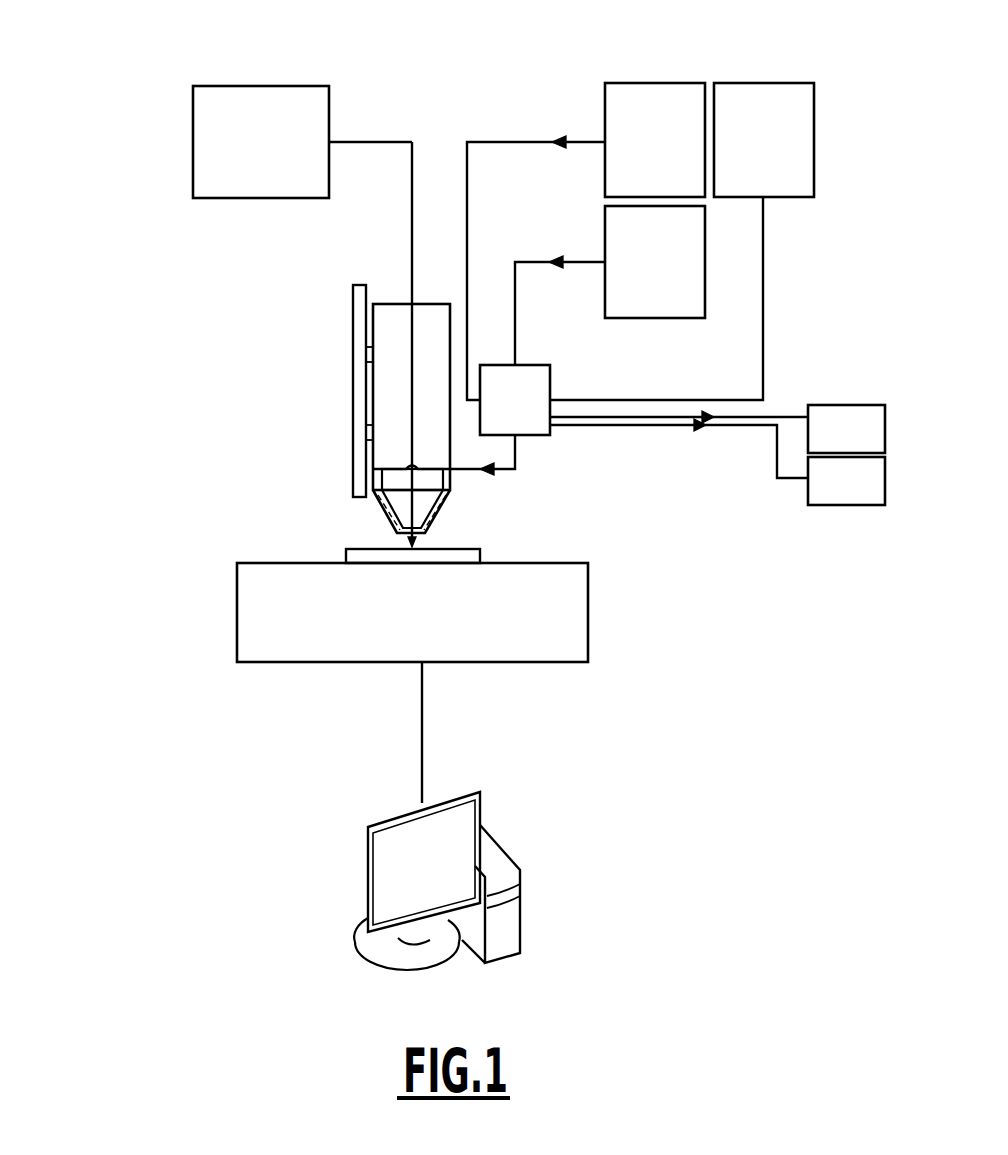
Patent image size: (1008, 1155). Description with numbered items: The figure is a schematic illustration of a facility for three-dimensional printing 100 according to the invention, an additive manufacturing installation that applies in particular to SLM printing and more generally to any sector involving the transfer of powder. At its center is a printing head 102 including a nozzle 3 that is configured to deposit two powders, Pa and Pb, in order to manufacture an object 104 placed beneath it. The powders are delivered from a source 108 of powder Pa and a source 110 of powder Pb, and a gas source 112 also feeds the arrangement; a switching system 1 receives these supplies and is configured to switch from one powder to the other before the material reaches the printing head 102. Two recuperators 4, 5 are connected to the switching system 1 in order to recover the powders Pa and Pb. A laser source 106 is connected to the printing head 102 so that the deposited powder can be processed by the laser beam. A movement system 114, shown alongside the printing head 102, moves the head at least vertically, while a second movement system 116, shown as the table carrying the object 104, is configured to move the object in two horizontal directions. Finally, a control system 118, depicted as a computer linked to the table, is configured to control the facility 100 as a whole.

The facility for 3D printing 100 is at (145, 268).
The printing head 102 is at (390, 315).
The object 104 is at (470, 557).
The laser source 106 is at (302, 142).
The source of powder Pa 108 is at (656, 83).
The source of powder Pb 110 is at (764, 83).
The gas source 112 is at (653, 318).
The movement system 114 is at (360, 392).
The movement system 116 is at (590, 612).
The control system 118 is at (570, 871).
The switching system 1 is at (500, 420).
The nozzle 3 is at (443, 507).
The recuperator 4 is at (717, 429).
The recuperator 5 is at (717, 462).